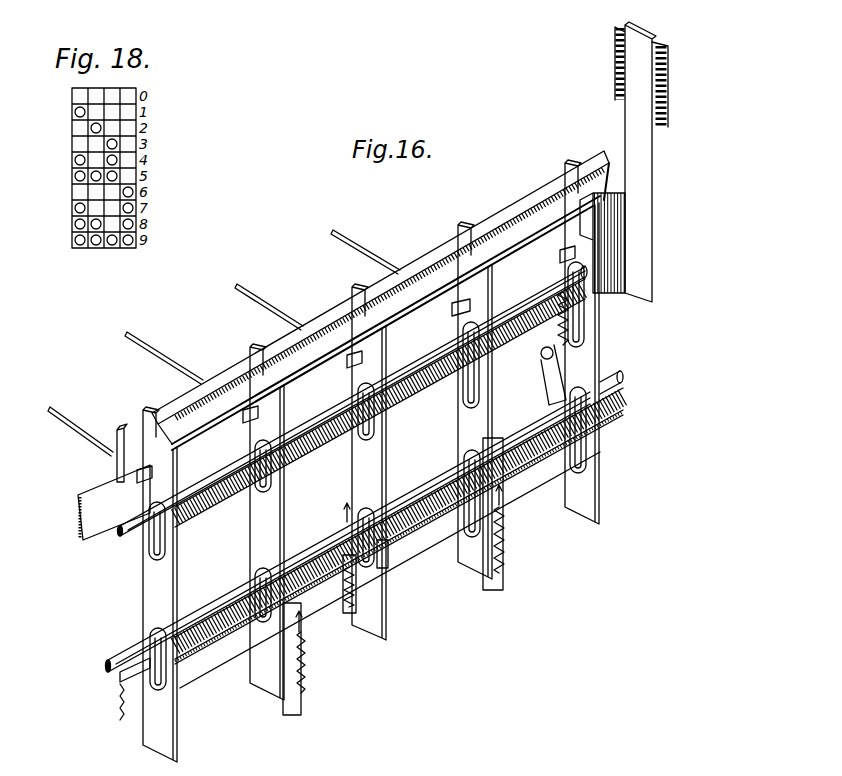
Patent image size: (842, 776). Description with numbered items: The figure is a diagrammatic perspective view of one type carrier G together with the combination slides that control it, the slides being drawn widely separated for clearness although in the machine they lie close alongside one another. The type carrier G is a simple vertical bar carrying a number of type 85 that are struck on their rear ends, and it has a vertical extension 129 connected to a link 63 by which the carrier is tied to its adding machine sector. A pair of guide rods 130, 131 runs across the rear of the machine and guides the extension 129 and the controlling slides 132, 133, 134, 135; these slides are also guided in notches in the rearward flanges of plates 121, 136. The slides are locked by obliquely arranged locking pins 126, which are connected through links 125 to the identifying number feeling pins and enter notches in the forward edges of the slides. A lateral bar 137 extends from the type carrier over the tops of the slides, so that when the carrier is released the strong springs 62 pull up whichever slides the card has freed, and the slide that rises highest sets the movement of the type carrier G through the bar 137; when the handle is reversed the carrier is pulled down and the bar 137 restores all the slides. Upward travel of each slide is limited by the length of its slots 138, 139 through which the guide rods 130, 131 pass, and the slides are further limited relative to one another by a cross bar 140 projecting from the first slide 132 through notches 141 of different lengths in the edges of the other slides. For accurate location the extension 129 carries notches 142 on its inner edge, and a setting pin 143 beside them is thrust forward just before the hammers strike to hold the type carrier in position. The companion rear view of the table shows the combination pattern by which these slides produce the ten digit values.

The plate 121 is at (277, 357).
The lateral bar 137 is at (522, 232).
The links 125 is at (88, 433).
The locking pins 126 is at (112, 458).
The first controlling slide 132 is at (152, 607).
The controlling slide 133 is at (268, 535).
The controlling slide 134 is at (362, 478).
The controlling slide 135 is at (468, 421).
The vertical extension 129 is at (587, 357).
The guide rod 130 is at (203, 497).
The guide rod 131 is at (232, 583).
The plate 136 is at (387, 483).
The slot 138 is at (273, 470).
The slot 139 is at (257, 617).
The cross bar 140 is at (317, 557).
The notches 141 is at (385, 552).
The springs 62 is at (303, 632).
The link 63 is at (542, 395).
The notches 142 is at (562, 320).
The setting pin 143 is at (560, 252).
The type carrier G is at (642, 48).
The type 85 is at (666, 56).